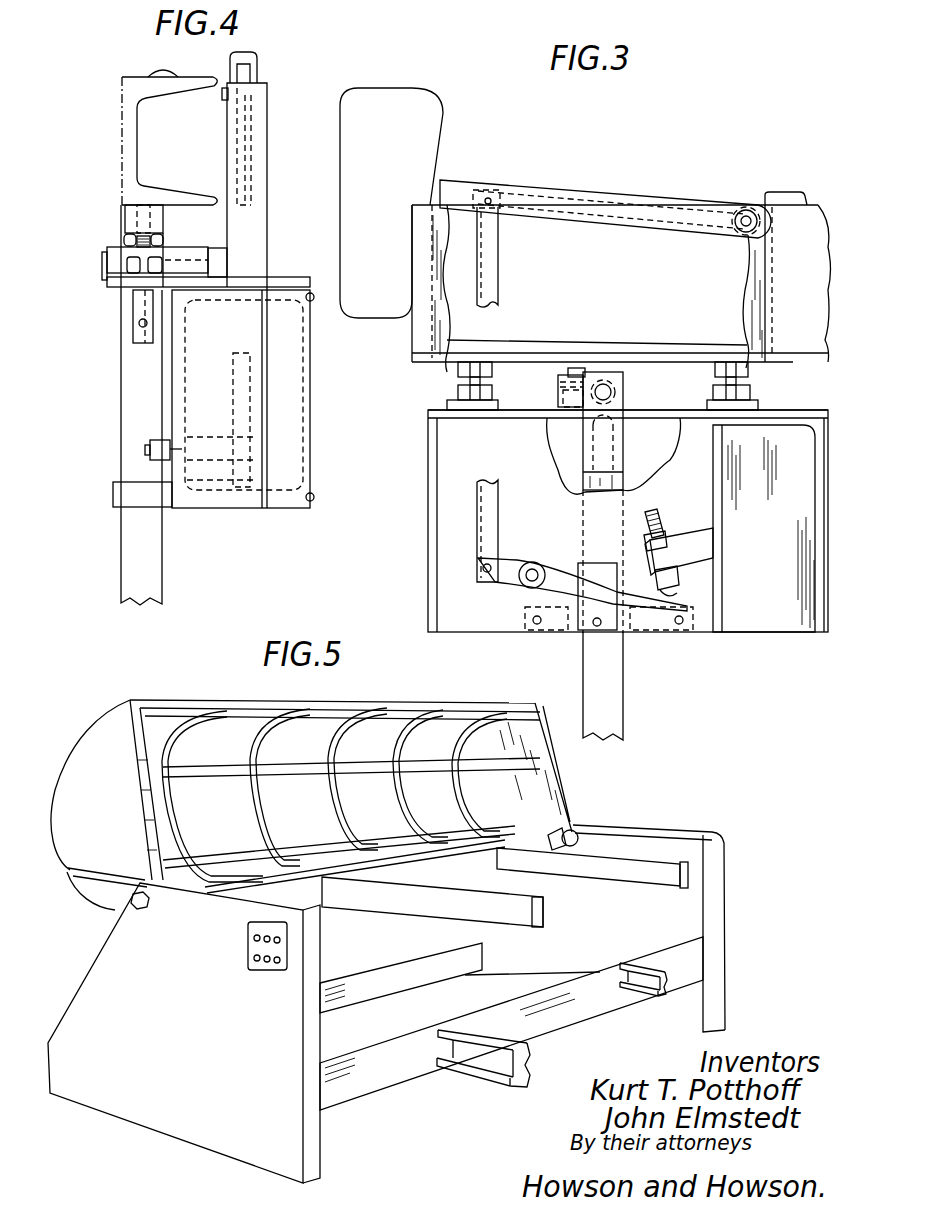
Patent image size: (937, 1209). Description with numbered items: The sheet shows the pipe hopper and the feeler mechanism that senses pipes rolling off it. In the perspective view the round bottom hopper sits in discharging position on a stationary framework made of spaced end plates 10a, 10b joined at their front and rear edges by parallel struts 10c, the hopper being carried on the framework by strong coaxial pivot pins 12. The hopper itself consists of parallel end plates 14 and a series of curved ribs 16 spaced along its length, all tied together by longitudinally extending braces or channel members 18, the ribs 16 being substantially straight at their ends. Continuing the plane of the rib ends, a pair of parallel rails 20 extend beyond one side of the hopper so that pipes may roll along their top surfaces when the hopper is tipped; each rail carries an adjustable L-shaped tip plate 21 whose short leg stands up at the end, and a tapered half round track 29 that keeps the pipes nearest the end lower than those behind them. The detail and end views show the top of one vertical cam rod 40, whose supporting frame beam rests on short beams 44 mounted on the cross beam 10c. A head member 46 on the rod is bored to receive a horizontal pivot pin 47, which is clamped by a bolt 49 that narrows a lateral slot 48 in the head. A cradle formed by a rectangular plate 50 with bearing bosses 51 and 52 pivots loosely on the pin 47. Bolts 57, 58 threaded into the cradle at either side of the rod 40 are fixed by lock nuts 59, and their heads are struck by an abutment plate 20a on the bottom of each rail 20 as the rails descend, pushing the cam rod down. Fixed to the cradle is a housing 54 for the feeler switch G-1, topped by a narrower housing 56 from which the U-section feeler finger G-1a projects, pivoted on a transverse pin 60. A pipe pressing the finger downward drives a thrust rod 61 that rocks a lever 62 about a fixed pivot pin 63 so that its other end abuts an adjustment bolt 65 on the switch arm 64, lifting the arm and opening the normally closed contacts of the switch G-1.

In FIG. 5, the end plate 10a is at (212, 1042).
In FIG. 5, the end plate 10b is at (620, 932).
In FIG. 5, the strut 10c is at (383, 1057).
In FIG. 5, the pivot pin 12 is at (576, 831).
In FIG. 5, the end plate 14 is at (97, 810).
In FIG. 5, the curved rib 16 is at (345, 742).
In FIG. 5, the brace 18 is at (260, 723).
In FIG. 4, the rail 20 is at (130, 133).
In FIG. 3, the rail 20 is at (815, 293).
In FIG. 5, the rail 20 is at (400, 898).
In FIG. 4, the abutment plate 20a is at (125, 216).
In FIG. 3, the abutment plate 20a is at (412, 348).
In FIG. 3, the tip plate 21 is at (393, 157).
In FIG. 4, the half round track 29 is at (160, 70).
In FIG. 3, the half round track 29 is at (773, 193).
In FIG. 4, the cam rod 40 is at (137, 402).
In FIG. 3, the cam rod 40 is at (618, 689).
In FIG. 5, the beam 44 is at (493, 1057).
In FIG. 4, the head member 46 is at (130, 250).
In FIG. 3, the head member 46 is at (620, 460).
In FIG. 4, the pivot pin 47 is at (183, 263).
In FIG. 3, the pivot pin 47 is at (608, 392).
In FIG. 3, the slot 48 is at (565, 386).
In FIG. 3, the bolt 49 is at (578, 368).
In FIG. 4, the cradle plate 50 is at (108, 286).
In FIG. 4, the bearing boss 51 is at (104, 252).
In FIG. 3, the bearing boss 51 is at (655, 405).
In FIG. 4, the bearing boss 52 is at (228, 251).
In FIG. 3, the bearing boss 52 is at (522, 411).
In FIG. 4, the housing 54 is at (290, 440).
In FIG. 3, the housing 54 is at (628, 521).
In FIG. 4, the housing 56 is at (266, 116).
In FIG. 3, the housing 56 is at (597, 302).
In FIG. 3, the bolt head 57 is at (731, 373).
In FIG. 3, the adjustment bolt 58 is at (456, 392).
In FIG. 4, the lock nut 59 is at (147, 270).
In FIG. 3, the lock nut 59 is at (733, 393).
In FIG. 3, the pivot pin 60 is at (742, 208).
In FIG. 4, the thrust rod 61 is at (248, 172).
In FIG. 3, the thrust rod 61 is at (498, 263).
In FIG. 3, the lever 62 is at (513, 581).
In FIG. 3, the pivot pin 63 is at (538, 572).
In FIG. 3, the switch arm 64 is at (700, 548).
In FIG. 3, the adjustment bolt 65 is at (676, 591).
In FIG. 3, the feeler switch G-1 is at (785, 537).
In FIG. 4, the feeler finger G-1a is at (255, 53).
In FIG. 3, the feeler finger G-1a is at (465, 188).